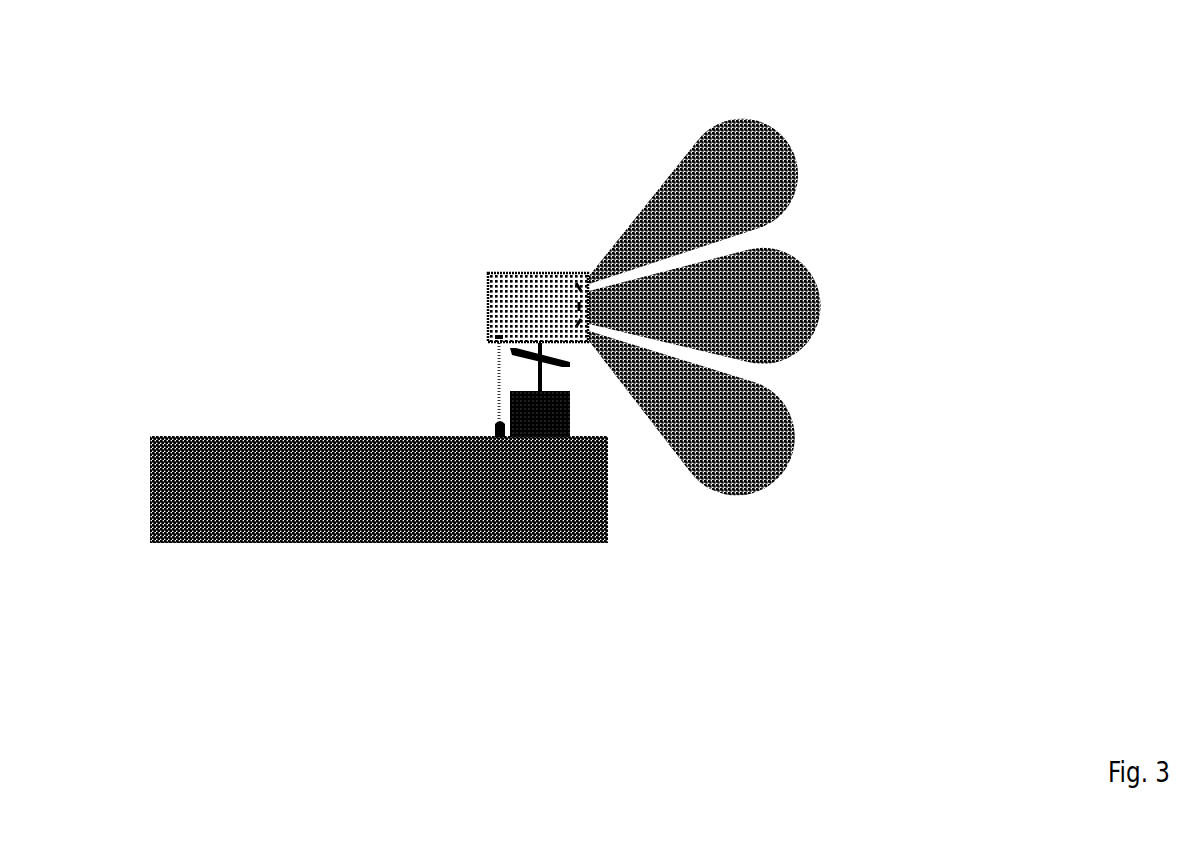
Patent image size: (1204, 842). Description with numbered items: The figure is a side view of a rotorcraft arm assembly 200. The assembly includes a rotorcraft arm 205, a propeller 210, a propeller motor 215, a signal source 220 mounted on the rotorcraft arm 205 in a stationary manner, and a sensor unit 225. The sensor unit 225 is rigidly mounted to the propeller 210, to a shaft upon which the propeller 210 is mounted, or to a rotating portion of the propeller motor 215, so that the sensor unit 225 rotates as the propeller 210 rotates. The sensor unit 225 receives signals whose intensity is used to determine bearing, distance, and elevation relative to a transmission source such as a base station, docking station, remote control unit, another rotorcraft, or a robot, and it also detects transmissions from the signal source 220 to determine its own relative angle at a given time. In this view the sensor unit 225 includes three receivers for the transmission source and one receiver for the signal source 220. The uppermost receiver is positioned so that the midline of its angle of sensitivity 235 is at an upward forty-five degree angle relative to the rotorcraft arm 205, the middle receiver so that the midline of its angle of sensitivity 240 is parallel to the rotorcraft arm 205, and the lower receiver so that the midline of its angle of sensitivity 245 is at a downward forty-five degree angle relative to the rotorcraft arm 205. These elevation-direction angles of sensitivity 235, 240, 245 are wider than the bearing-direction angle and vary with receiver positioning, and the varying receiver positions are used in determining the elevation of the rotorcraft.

The rotorcraft arm assembly 200 is at (912, 113).
The rotorcraft arm 205 is at (217, 437).
The propeller 210 is at (565, 365).
The propeller motor 215 is at (540, 432).
The signal source 220 is at (495, 425).
The sensor unit 225 is at (502, 280).
The angle of sensitivity 235 is at (697, 142).
The angle of sensitivity 240 is at (818, 305).
The angle of sensitivity 245 is at (782, 455).